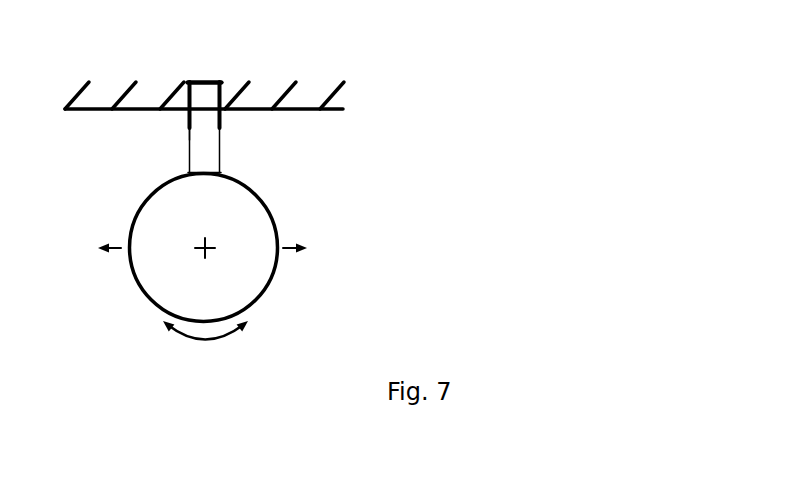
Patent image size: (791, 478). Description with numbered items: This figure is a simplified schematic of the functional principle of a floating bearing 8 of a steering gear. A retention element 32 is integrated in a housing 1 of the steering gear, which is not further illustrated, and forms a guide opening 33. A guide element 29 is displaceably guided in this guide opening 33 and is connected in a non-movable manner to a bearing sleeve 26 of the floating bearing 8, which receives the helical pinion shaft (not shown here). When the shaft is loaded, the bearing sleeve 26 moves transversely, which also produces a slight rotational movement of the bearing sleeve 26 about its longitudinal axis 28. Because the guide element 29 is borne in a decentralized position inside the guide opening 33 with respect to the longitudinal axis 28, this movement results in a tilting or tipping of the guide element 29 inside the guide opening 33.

The housing 1 is at (312, 97).
The floating bearing 8 is at (189, 176).
The bearing sleeve 26 is at (278, 217).
The longitudinal axis 28 is at (224, 249).
The guide element 29 is at (210, 153).
The retention element 32 is at (185, 123).
The guide opening 33 is at (224, 79).